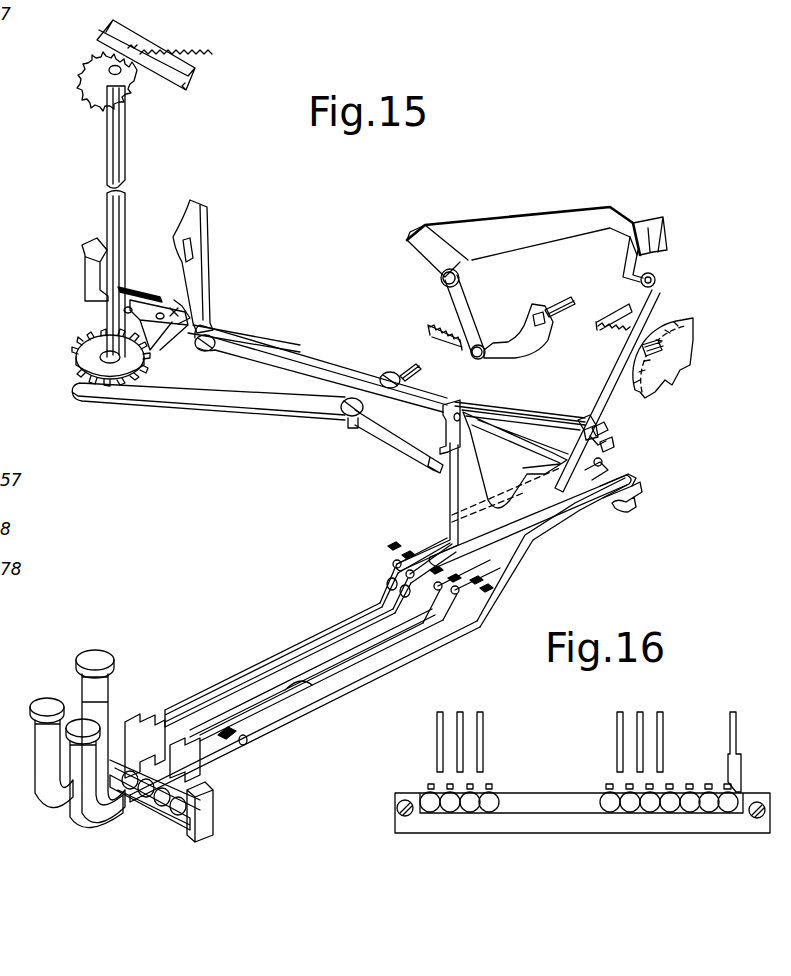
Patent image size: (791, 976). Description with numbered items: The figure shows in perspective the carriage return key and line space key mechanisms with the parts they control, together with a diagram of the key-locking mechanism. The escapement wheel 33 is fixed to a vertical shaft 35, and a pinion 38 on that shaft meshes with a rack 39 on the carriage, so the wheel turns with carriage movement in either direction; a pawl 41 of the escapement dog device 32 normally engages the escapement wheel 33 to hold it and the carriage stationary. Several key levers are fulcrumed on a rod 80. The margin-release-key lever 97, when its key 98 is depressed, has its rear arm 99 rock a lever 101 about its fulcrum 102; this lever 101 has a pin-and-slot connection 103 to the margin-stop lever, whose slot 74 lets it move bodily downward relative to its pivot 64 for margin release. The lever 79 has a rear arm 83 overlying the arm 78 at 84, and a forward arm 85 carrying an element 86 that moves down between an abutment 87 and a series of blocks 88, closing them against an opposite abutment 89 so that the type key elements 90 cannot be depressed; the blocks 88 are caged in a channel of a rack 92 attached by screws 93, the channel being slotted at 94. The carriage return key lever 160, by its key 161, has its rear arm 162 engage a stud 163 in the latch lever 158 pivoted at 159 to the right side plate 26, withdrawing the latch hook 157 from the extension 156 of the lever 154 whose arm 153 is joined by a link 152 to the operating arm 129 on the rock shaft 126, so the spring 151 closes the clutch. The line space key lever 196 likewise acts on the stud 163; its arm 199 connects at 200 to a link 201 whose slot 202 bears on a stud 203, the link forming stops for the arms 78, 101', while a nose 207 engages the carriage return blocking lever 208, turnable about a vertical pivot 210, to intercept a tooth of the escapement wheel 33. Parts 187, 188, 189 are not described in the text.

In FIG. 15, the pinion 38 is at (96, 69).
In FIG. 15, the rack 39 is at (182, 63).
In FIG. 15, the vertical shaft 35 is at (125, 131).
In FIG. 15, the slot 74 is at (203, 242).
In FIG. 15, the pivot 64 is at (195, 252).
In FIG. 15, the pin-and-slot connection 103 is at (218, 330).
In FIG. 15, the lever 101 is at (321, 364).
In FIG. 15, the fulcrum 102 is at (405, 370).
In FIG. 15, the escapement wheel 33 is at (74, 354).
In FIG. 15, the escapement dog device 32 is at (178, 312).
In FIG. 15, the pawl 41 is at (150, 342).
In FIG. 15, the carriage return blocking lever 208 is at (226, 412).
In FIG. 15, the vertical pivot 210 is at (343, 408).
In FIG. 15, the connection 200 is at (443, 424).
In FIG. 15, the nose 207 is at (433, 466).
In FIG. 15, the arm 199 is at (450, 504).
In FIG. 15, the rear arm 99 is at (497, 503).
In FIG. 15, the margin-release-key lever 97 is at (385, 590).
In FIG. 15, the line space key lever 196 is at (285, 663).
In FIG. 15, the margin release key 98 is at (83, 650).
In FIG. 15, the carriage return key 161 is at (123, 752).
In FIG. 15, the forward arm 85 is at (304, 689).
In FIG. 15, the key-locking element 86 is at (200, 779).
In FIG. 15, the abutment 87 is at (206, 813).
In FIG. 15, the blocks 88 is at (172, 808).
In FIG. 16, the blocks 88 is at (627, 812).
In FIG. 15, the carriage return key lever 160 is at (387, 667).
In FIG. 15, the rod 80 is at (475, 586).
In FIG. 15, the lever 79 is at (498, 546).
In FIG. 15, the arm 78 is at (624, 503).
In FIG. 15, the rear arm 83 is at (630, 477).
In FIG. 15, the overlying point 84 is at (632, 487).
In FIG. 15, the rear arm 162 is at (593, 463).
In FIG. 15, the stud 163 is at (600, 443).
In FIG. 15, the latch lever 158 is at (623, 410).
In FIG. 15, the pivot 159 is at (662, 347).
In FIG. 15, the right side plate 26 is at (684, 344).
In FIG. 15, the slot 202 is at (592, 413).
In FIG. 15, the stud 203 is at (577, 422).
In FIG. 15, the link 201 is at (523, 413).
In FIG. 15, the arm 101' is at (516, 397).
In FIG. 15, the operating arm 129 is at (547, 340).
In FIG. 15, the link 152 is at (477, 313).
In FIG. 15, the spring 151 is at (435, 317).
In FIG. 15, the arm 153 is at (448, 253).
In FIG. 15, the lever 154 is at (417, 230).
In FIG. 15, the extension 156 is at (640, 213).
In FIG. 15, the latch hook 157 is at (659, 221).
In FIG. 15, the arm 187 is at (633, 237).
In FIG. 15, the pivot 188 is at (655, 279).
In FIG. 15, the spring 189 is at (592, 322).
In FIG. 15, the rock shaft 126 is at (571, 304).
In FIG. 16, the rack 92 is at (533, 823).
In FIG. 16, the abutment 89 is at (420, 794).
In FIG. 16, the screws 93 is at (751, 830).
In FIG. 16, the slot 94 is at (483, 787).
In FIG. 16, the type key elements 90 is at (615, 745).